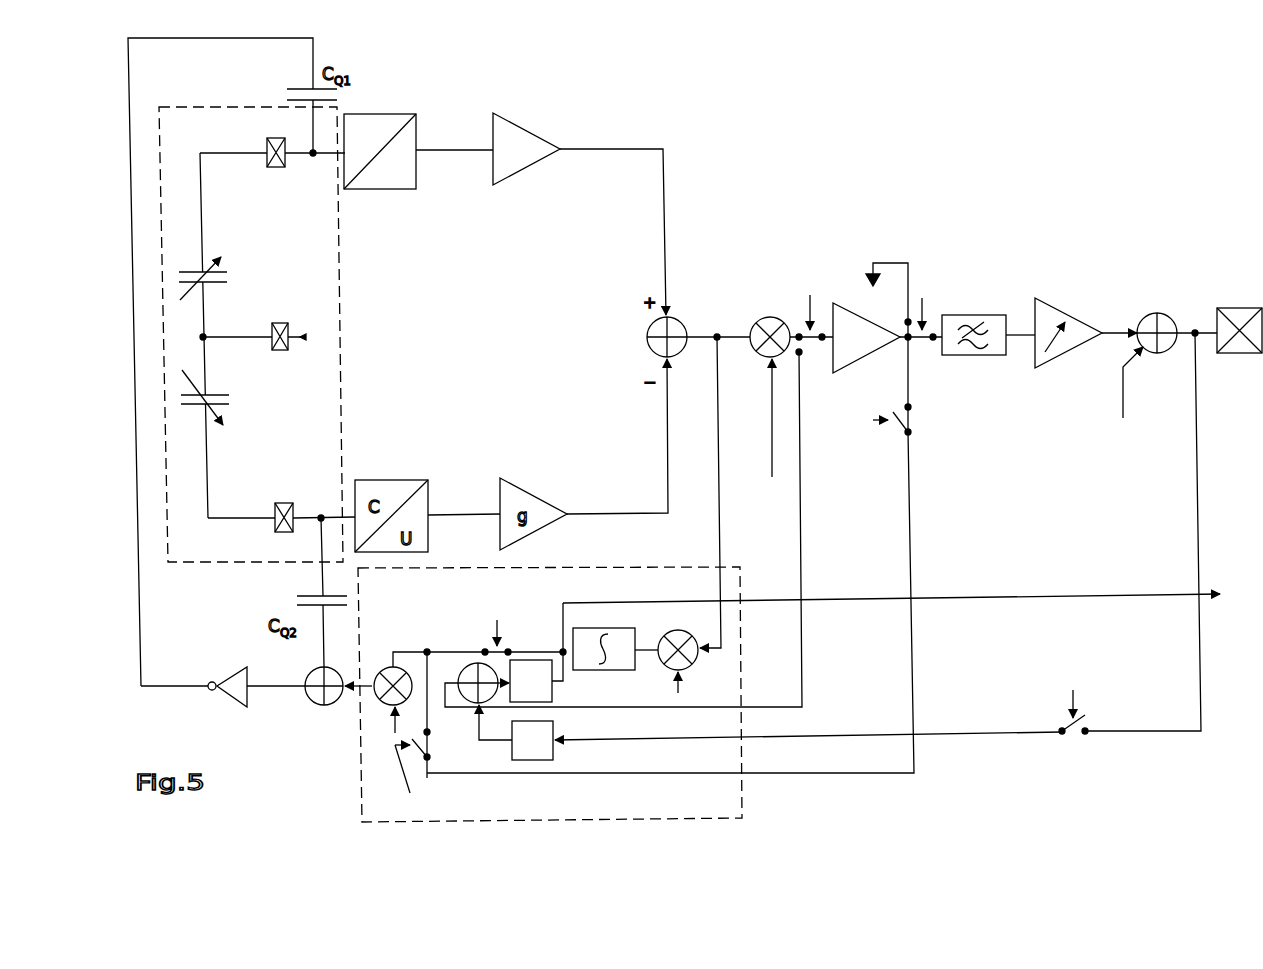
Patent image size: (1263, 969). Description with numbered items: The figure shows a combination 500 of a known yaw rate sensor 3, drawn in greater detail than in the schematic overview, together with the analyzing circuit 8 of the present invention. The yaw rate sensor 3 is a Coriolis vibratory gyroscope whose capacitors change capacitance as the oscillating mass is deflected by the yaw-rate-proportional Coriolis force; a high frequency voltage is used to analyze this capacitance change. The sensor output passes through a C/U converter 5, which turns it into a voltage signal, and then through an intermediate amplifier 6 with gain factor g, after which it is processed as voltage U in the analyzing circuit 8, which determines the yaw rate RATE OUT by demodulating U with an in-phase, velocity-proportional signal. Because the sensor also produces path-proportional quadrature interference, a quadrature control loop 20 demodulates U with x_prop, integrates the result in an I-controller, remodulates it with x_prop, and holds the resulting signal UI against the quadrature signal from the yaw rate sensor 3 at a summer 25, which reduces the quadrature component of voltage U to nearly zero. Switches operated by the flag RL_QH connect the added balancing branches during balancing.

The yaw rate sensor 3 is at (432, 62).
The C/U converter 5 is at (393, 122).
The intermediate amplifier 6 is at (505, 135).
The analyzing circuit 8 is at (1252, 198).
The combination 500 is at (1150, 73).
The summer 25 is at (312, 705).
The quadrature control loop 20 is at (743, 795).